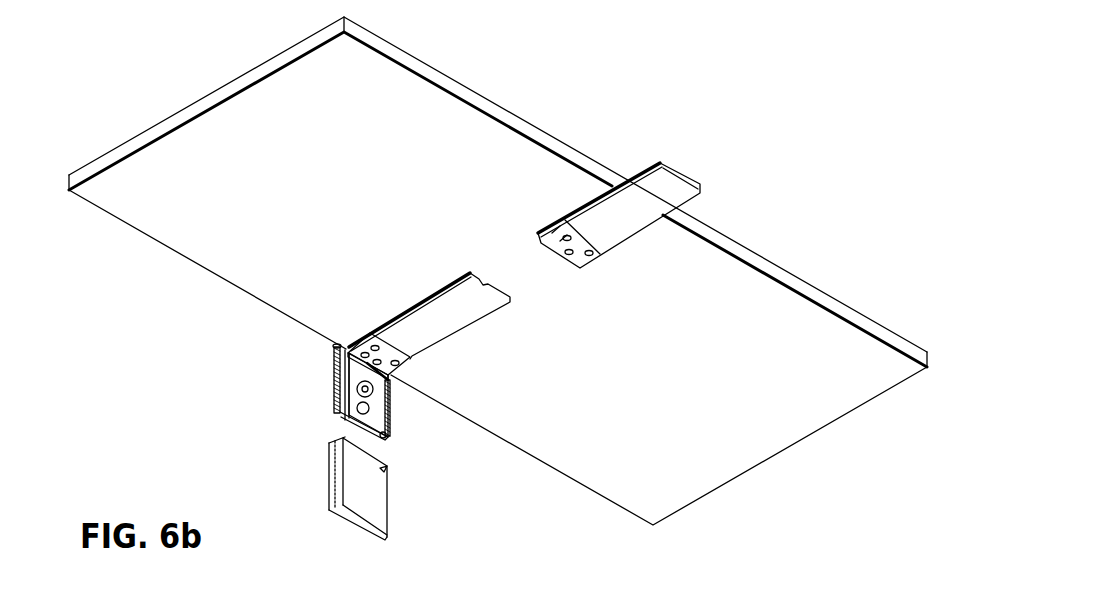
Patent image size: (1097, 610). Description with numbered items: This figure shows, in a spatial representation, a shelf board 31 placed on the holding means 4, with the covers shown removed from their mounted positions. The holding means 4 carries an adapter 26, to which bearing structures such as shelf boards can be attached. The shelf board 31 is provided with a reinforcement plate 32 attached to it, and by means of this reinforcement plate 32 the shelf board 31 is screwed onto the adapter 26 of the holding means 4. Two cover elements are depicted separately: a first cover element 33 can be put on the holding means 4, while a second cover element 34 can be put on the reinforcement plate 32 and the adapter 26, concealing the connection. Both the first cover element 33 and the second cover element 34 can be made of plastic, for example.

The holding means 4 is at (323, 381).
The adapter 26 is at (412, 368).
The shelf board 31 is at (778, 282).
The reinforcement plate 32 is at (422, 310).
The first cover element 33 is at (378, 497).
The second cover element 34 is at (693, 182).